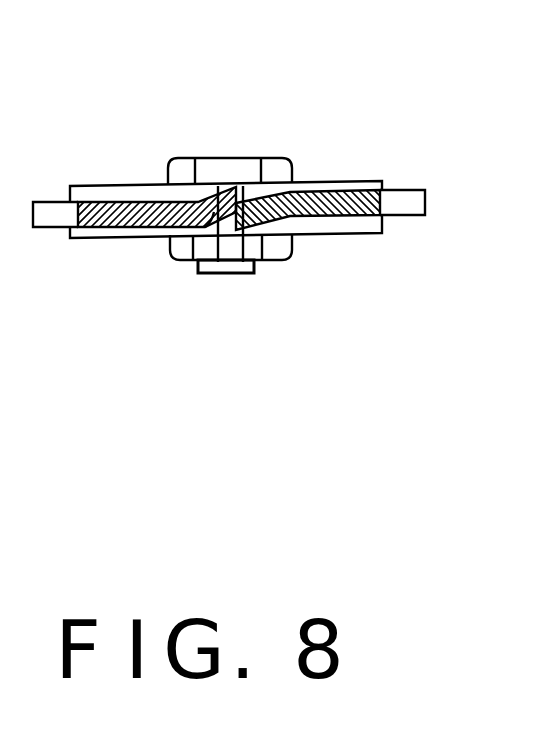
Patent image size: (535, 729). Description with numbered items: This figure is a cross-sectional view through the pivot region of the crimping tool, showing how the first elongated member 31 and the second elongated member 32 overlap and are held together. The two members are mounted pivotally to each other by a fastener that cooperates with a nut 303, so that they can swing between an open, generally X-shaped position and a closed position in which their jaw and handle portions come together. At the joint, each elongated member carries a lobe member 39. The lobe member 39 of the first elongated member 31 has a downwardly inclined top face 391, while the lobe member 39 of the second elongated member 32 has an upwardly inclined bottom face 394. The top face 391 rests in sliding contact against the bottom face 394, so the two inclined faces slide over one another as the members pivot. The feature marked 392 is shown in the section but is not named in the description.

The first elongated member 31 is at (407, 196).
The second elongated member 32 is at (47, 218).
The lobe member 39 is at (233, 183).
The top face 391 is at (247, 183).
The bolt head nut 392 is at (217, 187).
The nut 303 is at (279, 255).
The bottom face 394 is at (195, 268).